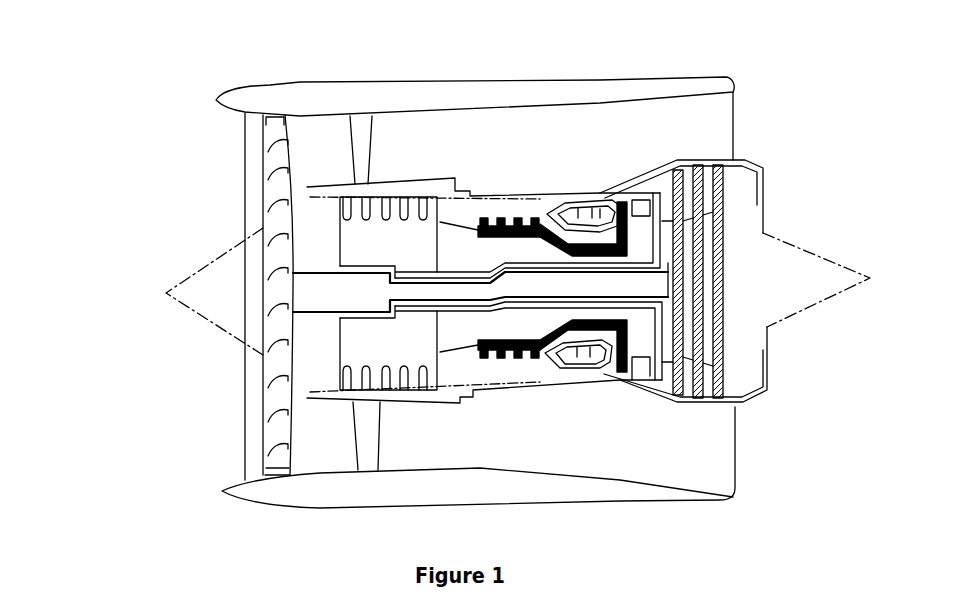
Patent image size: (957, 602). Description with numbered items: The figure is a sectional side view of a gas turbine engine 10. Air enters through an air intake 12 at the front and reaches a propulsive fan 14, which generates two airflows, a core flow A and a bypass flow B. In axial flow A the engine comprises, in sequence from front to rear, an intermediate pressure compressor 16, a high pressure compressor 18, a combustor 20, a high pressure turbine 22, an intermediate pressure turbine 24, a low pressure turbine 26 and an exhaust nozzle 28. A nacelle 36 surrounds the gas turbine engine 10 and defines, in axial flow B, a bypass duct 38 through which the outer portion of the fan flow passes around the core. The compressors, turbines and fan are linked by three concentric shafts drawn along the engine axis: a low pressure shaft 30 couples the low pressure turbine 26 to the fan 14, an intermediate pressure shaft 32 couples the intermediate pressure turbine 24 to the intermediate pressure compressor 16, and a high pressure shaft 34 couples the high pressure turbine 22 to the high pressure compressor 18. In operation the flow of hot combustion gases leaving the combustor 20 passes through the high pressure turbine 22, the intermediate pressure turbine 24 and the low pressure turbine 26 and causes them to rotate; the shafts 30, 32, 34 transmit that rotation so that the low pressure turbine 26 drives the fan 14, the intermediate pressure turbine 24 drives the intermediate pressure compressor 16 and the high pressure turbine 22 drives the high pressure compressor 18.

The gas turbine engine 10 is at (130, 53).
The air intake 12 is at (255, 142).
The propulsive fan 14 is at (264, 115).
The intermediate pressure compressor 16 is at (362, 228).
The high pressure compressor 18 is at (520, 220).
The combustor 20 is at (580, 213).
The high pressure turbine 22 is at (615, 200).
The intermediate pressure turbine 24 is at (650, 203).
The low pressure turbine 26 is at (700, 182).
The exhaust nozzle 28 is at (757, 187).
The low pressure shaft 30 is at (330, 298).
The intermediate pressure shaft 32 is at (450, 303).
The high pressure shaft 34 is at (575, 322).
The nacelle 36 is at (343, 111).
The bypass duct 38 is at (514, 145).
The axial flow A is at (306, 205).
The axial flow B is at (306, 163).